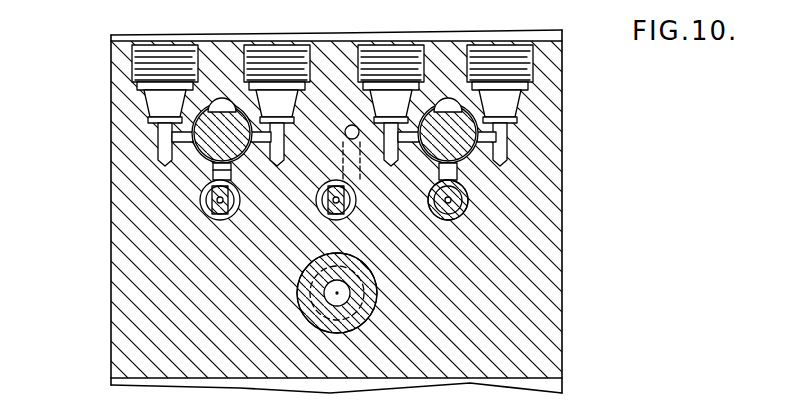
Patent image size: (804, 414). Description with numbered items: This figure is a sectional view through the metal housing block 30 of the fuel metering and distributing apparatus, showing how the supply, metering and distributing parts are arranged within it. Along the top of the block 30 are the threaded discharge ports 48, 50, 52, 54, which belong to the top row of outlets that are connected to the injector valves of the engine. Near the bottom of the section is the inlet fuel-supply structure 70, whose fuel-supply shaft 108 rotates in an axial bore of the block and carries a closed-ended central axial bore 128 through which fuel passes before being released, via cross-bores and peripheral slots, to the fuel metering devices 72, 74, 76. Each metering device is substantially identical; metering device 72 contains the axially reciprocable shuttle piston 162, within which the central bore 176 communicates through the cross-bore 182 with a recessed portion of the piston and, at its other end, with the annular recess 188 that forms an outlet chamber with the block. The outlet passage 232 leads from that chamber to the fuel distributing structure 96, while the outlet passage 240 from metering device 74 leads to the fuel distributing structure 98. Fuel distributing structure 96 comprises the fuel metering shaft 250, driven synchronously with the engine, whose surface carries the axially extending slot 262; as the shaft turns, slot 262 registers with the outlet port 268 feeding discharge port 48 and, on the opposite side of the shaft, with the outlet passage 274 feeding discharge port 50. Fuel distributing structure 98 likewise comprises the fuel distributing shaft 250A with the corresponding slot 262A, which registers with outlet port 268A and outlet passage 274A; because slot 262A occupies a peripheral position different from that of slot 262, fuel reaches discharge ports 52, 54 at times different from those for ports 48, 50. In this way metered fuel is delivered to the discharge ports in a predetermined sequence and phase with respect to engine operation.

The housing block 30 is at (117, 195).
The discharge port 48 is at (194, 56).
The discharge port 50 is at (306, 57).
The discharge port 52 is at (418, 58).
The discharge port 54 is at (532, 47).
The slot 262 is at (222, 103).
The slot 262A is at (455, 104).
The outlet port 268 is at (165, 133).
The outlet port 268A is at (389, 130).
The outlet passage 274 is at (286, 137).
The outlet passage 274A is at (510, 137).
The outlet passage 240 is at (343, 146).
The fuel metering shaft 250 is at (205, 153).
The fuel distributing shaft 250A is at (471, 158).
The fuel distributing structure 96 is at (214, 163).
The fuel distributing structure 98 is at (428, 155).
The outlet passage 232 is at (232, 173).
The fuel metering device 72 is at (212, 224).
The fuel metering device 74 is at (352, 215).
The fuel metering device 76 is at (466, 215).
The central bore 176 is at (212, 204).
The shuttle piston 162 is at (236, 196).
The annular recess 188 is at (238, 206).
The cross-bore 182 is at (224, 218).
The inlet fuel-supply structure 70 is at (337, 333).
The fuel-supply shaft 108 is at (364, 322).
The central axial bore 128 is at (330, 293).